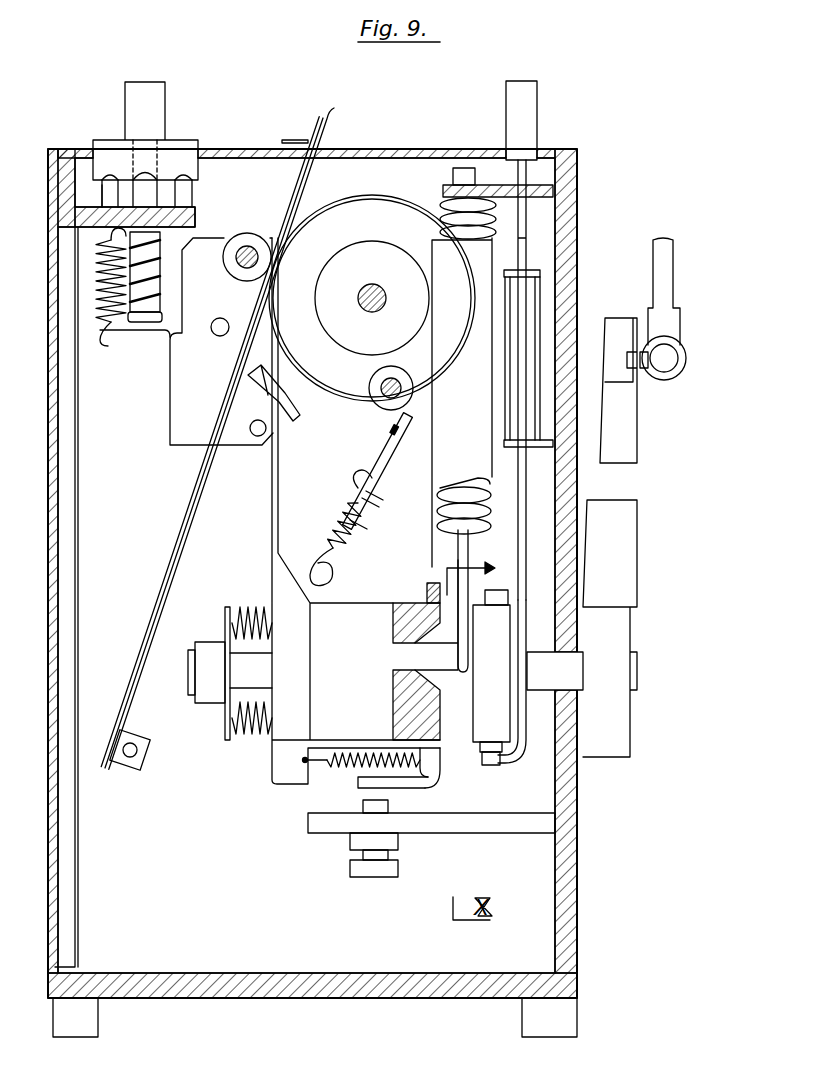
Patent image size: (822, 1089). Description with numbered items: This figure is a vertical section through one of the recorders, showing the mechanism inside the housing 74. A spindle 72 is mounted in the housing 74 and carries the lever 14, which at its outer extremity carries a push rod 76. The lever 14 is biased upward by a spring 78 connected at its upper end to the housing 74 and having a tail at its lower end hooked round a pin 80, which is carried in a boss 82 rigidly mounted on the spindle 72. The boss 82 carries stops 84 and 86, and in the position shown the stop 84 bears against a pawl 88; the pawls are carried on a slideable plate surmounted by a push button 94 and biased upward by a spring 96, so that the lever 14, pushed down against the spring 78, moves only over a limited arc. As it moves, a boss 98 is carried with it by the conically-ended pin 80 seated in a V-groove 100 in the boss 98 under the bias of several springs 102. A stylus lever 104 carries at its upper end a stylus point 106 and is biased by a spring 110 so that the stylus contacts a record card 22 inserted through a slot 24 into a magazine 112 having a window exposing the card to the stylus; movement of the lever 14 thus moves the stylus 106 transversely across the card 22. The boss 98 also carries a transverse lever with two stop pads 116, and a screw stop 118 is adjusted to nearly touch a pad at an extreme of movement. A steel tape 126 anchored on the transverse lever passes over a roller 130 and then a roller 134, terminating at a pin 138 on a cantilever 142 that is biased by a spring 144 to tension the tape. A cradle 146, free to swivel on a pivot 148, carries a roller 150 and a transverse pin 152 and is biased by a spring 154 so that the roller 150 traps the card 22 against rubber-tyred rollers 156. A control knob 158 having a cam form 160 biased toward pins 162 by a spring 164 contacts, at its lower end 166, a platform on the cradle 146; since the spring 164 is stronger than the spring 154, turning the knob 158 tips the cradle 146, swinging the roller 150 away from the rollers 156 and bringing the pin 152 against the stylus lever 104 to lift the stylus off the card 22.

The lever 14 is at (627, 557).
The record card 22 is at (323, 112).
The slot 24 is at (312, 116).
The spindle 72 is at (563, 668).
The housing 74 is at (68, 938).
The push rod 76 is at (666, 267).
The spring 78 is at (440, 493).
The pin 80 is at (427, 657).
The boss 82 is at (503, 648).
The stop 84 is at (492, 767).
The stop 86 is at (492, 597).
The pawl 88 is at (510, 760).
The push button 94 is at (533, 115).
The spring 96 is at (540, 302).
The boss 98 is at (323, 712).
The V-groove 100 is at (430, 592).
The springs 102 is at (270, 703).
The stylus lever 104 is at (272, 513).
The stylus point 106 is at (260, 382).
The spring 110 is at (392, 770).
The magazine 112 is at (287, 140).
The stop pads 116 is at (420, 783).
The screw stop 118 is at (375, 870).
The steel tape 126 is at (433, 407).
The roller 130 is at (397, 260).
The roller 134 is at (382, 402).
The pin 138 is at (392, 431).
The cantilever 142 is at (385, 468).
The spring 144 is at (322, 542).
The cradle 146 is at (177, 365).
The pivot 148 is at (212, 331).
The roller 150 is at (247, 238).
The transverse pin 152 is at (258, 436).
The spring 154 is at (123, 288).
The rubber-tyred rollers 156 is at (370, 197).
The control knob 158 is at (112, 147).
The cam form 160 is at (143, 157).
The pins 162 is at (107, 195).
The spring 164 is at (158, 267).
The lower end 166 is at (145, 318).